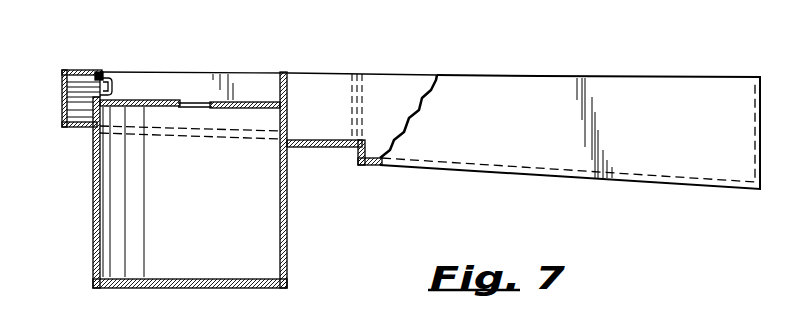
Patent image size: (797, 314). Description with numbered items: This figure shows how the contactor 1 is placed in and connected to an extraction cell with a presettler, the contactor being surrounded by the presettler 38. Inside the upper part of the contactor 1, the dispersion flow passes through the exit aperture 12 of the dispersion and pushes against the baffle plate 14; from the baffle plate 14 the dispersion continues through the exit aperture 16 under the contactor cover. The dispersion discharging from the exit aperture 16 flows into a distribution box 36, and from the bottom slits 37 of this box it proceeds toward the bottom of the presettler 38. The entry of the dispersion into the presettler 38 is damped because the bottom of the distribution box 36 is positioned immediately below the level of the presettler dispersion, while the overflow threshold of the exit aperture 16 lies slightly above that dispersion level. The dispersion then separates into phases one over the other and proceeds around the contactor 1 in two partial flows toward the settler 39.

The contactor 1 is at (287, 220).
The exit aperture of the dispersion 12 is at (190, 101).
The baffle plate 14 is at (135, 100).
The exit aperture 16 is at (103, 78).
The distribution box 36 is at (62, 81).
The bottom slits 37 is at (77, 97).
The presettler 38 is at (322, 86).
The settler 39 is at (505, 86).